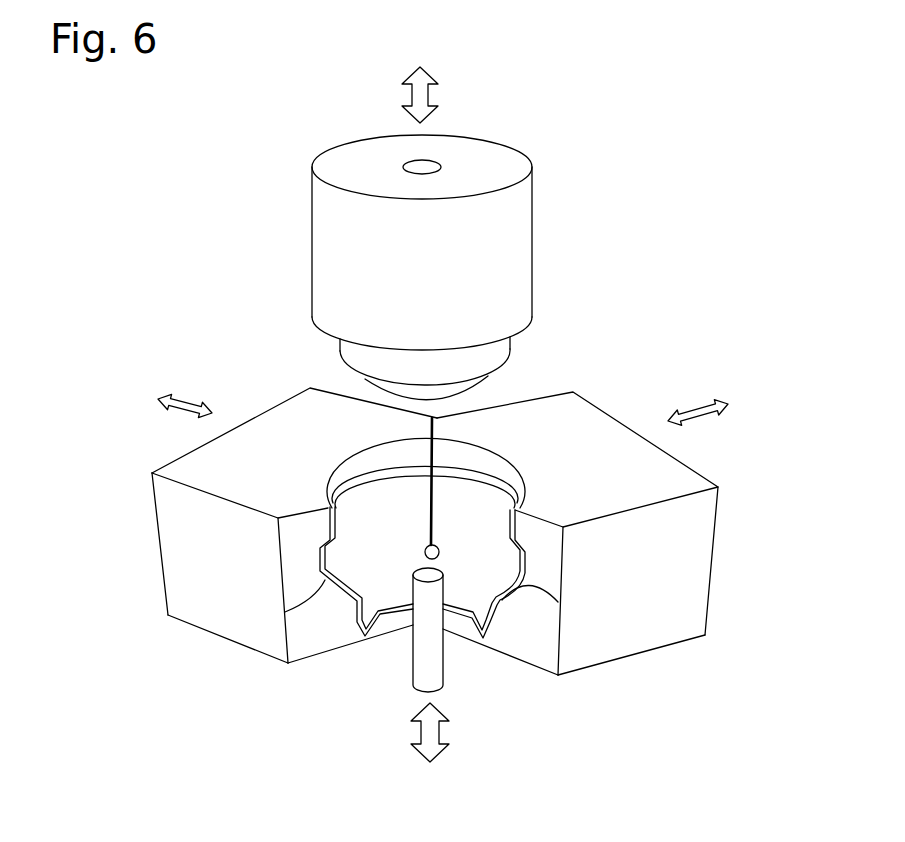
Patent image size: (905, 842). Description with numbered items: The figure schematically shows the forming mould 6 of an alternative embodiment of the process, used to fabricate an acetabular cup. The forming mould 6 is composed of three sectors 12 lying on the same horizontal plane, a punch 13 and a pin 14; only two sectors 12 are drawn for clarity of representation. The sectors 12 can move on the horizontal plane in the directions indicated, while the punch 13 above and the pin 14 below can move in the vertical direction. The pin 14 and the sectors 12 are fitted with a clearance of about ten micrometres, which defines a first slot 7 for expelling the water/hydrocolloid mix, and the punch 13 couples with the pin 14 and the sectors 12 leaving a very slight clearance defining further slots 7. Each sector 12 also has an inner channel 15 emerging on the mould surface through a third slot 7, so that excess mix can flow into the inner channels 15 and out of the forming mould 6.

The forming mould 6 is at (288, 382).
The slot 7 is at (437, 533).
The sector 12 is at (218, 545).
The punch 13 is at (478, 254).
The pin 14 is at (428, 658).
The inner channel 15 is at (323, 603).